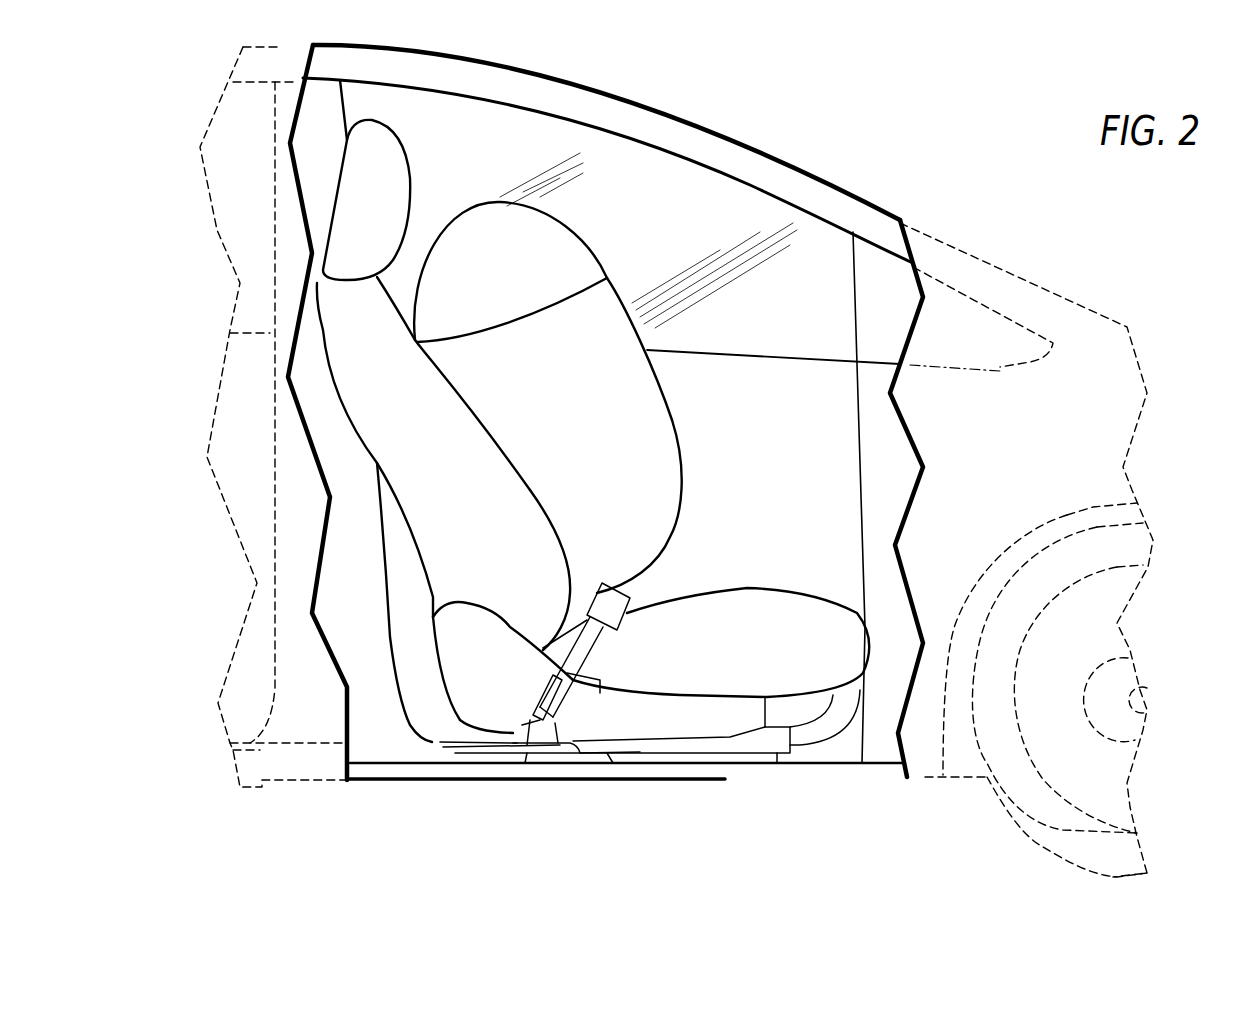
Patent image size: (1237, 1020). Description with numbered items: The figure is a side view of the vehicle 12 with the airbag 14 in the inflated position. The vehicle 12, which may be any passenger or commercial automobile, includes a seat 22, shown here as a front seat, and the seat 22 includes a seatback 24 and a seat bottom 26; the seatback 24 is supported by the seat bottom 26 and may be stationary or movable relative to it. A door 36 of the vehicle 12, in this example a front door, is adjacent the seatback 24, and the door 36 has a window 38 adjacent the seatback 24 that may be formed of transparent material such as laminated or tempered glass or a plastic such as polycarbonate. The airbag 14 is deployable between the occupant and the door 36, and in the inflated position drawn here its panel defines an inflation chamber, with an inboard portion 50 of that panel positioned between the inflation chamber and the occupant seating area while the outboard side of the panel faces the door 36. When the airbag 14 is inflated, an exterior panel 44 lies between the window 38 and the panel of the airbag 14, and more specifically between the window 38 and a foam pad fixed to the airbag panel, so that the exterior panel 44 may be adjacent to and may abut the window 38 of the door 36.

The vehicle 12 is at (867, 130).
The airbag 14 is at (678, 416).
The seat 22 is at (343, 427).
The seatback 24 is at (342, 334).
The seat bottom 26 is at (750, 630).
The door 36 is at (813, 423).
The window 38 is at (645, 160).
The exterior panel 44 is at (537, 250).
The inboard portion 50 is at (623, 493).